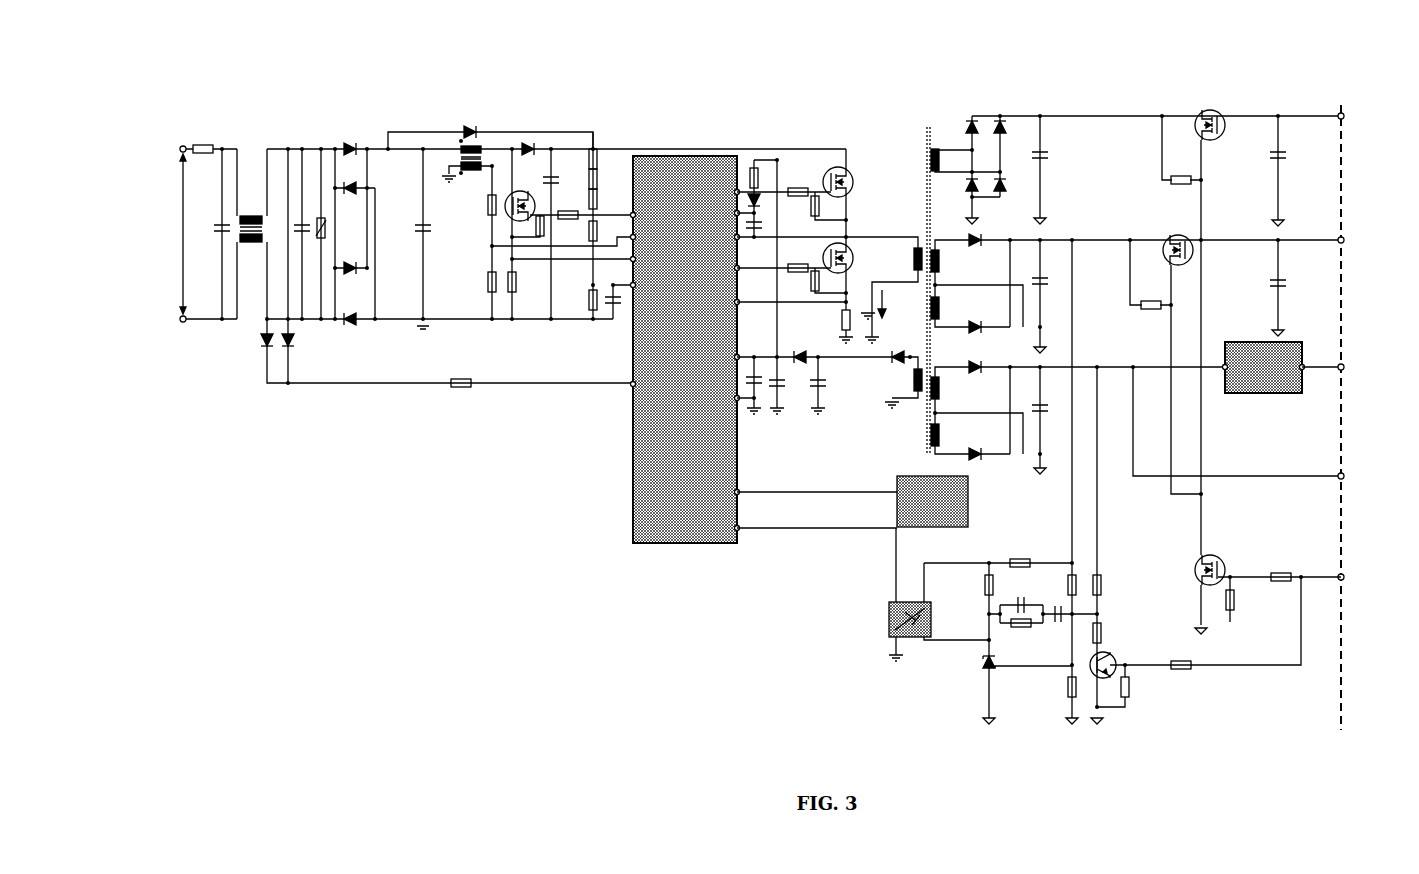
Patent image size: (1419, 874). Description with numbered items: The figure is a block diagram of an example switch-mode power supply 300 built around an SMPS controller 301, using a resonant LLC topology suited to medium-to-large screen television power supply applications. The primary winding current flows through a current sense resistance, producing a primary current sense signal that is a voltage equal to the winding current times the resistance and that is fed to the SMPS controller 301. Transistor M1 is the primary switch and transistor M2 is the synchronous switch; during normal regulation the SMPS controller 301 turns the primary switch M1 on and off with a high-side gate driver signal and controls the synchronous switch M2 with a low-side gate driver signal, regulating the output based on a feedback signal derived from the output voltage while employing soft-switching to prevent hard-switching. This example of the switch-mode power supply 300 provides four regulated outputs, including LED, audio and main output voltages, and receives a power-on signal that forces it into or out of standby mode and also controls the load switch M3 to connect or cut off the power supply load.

The switch-mode power supply 300 is at (833, 33).
The SMPS controller 301 is at (697, 543).
The primary switch M1 is at (825, 196).
The synchronous switch M2 is at (825, 276).
The load switch M3 is at (1174, 240).